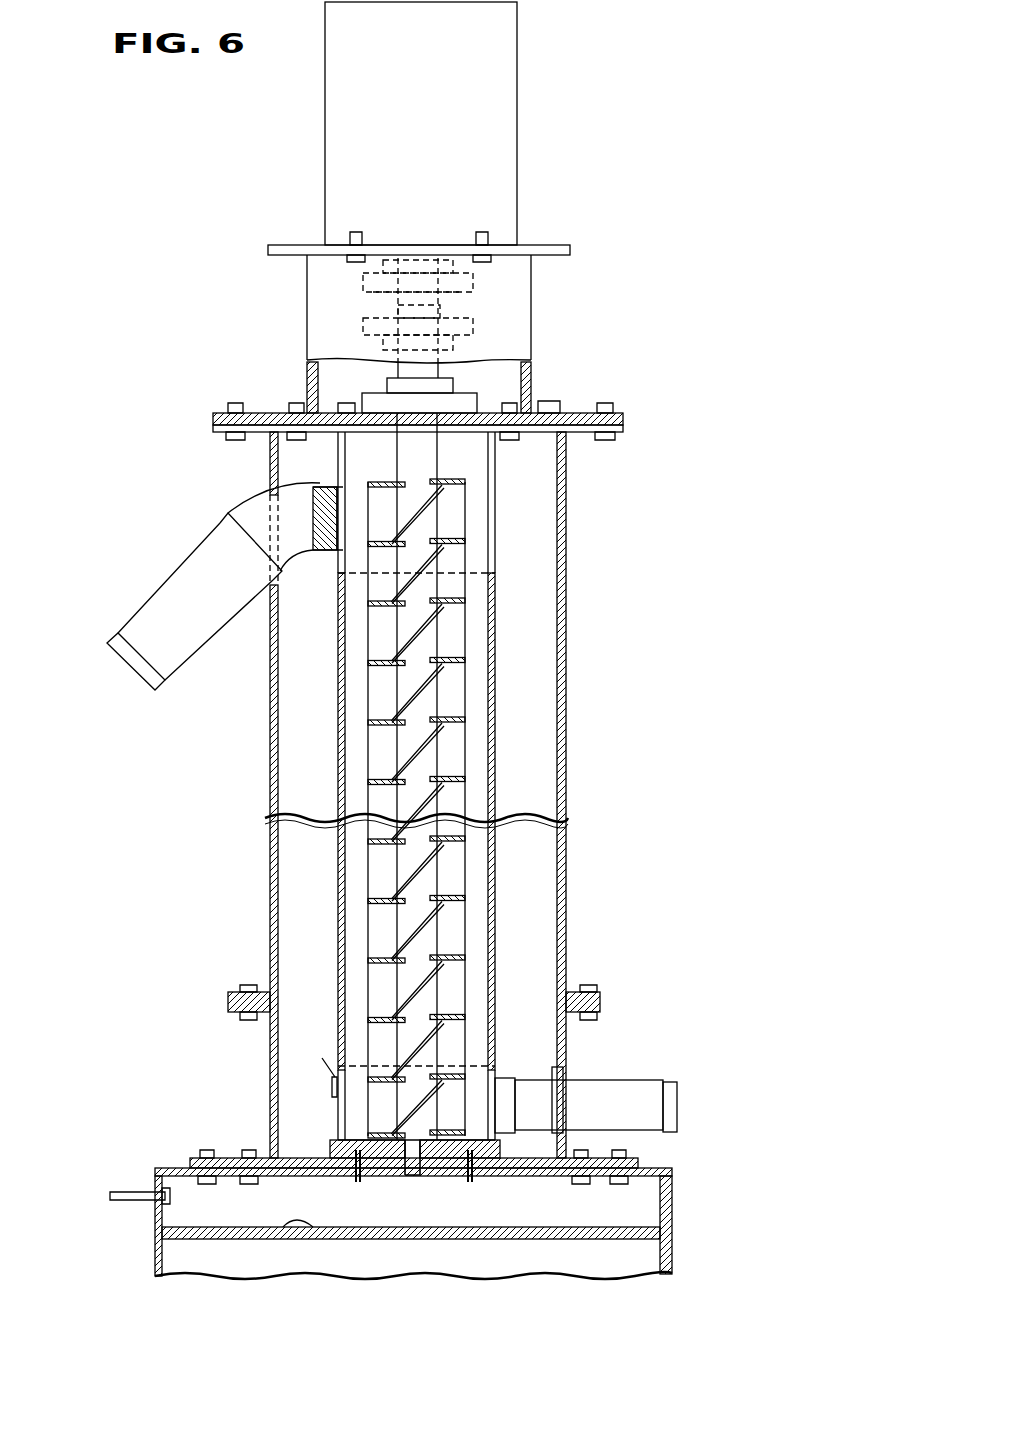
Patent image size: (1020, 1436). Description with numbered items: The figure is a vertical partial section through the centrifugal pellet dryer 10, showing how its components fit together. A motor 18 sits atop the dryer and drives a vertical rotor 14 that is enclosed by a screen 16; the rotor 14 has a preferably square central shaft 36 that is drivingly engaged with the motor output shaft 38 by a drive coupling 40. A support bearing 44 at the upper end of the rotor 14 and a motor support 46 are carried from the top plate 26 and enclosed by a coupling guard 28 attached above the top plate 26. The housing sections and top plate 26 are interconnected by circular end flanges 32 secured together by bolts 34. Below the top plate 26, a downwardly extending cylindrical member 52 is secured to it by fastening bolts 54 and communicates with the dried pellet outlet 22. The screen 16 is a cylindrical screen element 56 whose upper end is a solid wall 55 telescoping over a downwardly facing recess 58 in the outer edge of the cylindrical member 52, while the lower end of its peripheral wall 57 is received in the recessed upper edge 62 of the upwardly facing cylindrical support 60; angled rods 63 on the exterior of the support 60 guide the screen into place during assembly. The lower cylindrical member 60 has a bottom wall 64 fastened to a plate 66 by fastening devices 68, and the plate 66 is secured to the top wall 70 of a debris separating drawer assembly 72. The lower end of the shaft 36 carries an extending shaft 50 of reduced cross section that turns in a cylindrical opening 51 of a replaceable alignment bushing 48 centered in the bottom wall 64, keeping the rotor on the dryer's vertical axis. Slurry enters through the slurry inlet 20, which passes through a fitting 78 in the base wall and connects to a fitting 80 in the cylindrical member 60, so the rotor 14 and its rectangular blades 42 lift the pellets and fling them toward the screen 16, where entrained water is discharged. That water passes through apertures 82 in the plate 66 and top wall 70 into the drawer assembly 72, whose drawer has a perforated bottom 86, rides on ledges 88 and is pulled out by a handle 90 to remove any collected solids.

The centrifugal pellet dryer 10 is at (558, 285).
The rotor 14 is at (475, 733).
The screen 16 is at (498, 648).
The motor 18 is at (503, 72).
The slurry inlet 20 is at (653, 1080).
The dried pellet outlet 22 is at (168, 590).
The top plate 26 is at (565, 412).
The coupling guard 28 is at (515, 310).
The circular end flanges 32 is at (615, 430).
The bolts 34 is at (220, 432).
The central shaft 36 is at (397, 680).
The motor output shaft 38 is at (420, 250).
The drive coupling 40 is at (370, 300).
The blades 42 is at (378, 762).
The support bearing 44 is at (462, 394).
The motor support 46 is at (488, 407).
The alignment bushing 48 is at (445, 1173).
The extending shaft 50 is at (418, 1178).
The cylindrical opening 51 is at (398, 1177).
The cylindrical member 52 is at (487, 487).
The fastening bolts 54 is at (338, 433).
The solid wall 55 is at (495, 606).
The screen element 56 is at (495, 787).
The peripheral wall 57 is at (497, 1030).
The downwardly facing recess 58 is at (495, 572).
The cylindrical support 60 is at (337, 1107).
The recessed upper edge 62 is at (497, 1068).
The angled rods 63 is at (322, 1061).
The bottom wall 64 is at (487, 1160).
The plate 66 is at (190, 1165).
The fastening devices 68 is at (358, 1182).
The top wall 70 is at (653, 1165).
The debris separating drawer assembly 72 is at (160, 1251).
The fitting 78 is at (567, 1118).
The fitting 80 is at (539, 1163).
The apertures 82 is at (318, 1173).
The perforated bottom 86 is at (283, 1238).
The ledges 88 is at (325, 1238).
The handle 90 is at (130, 1201).